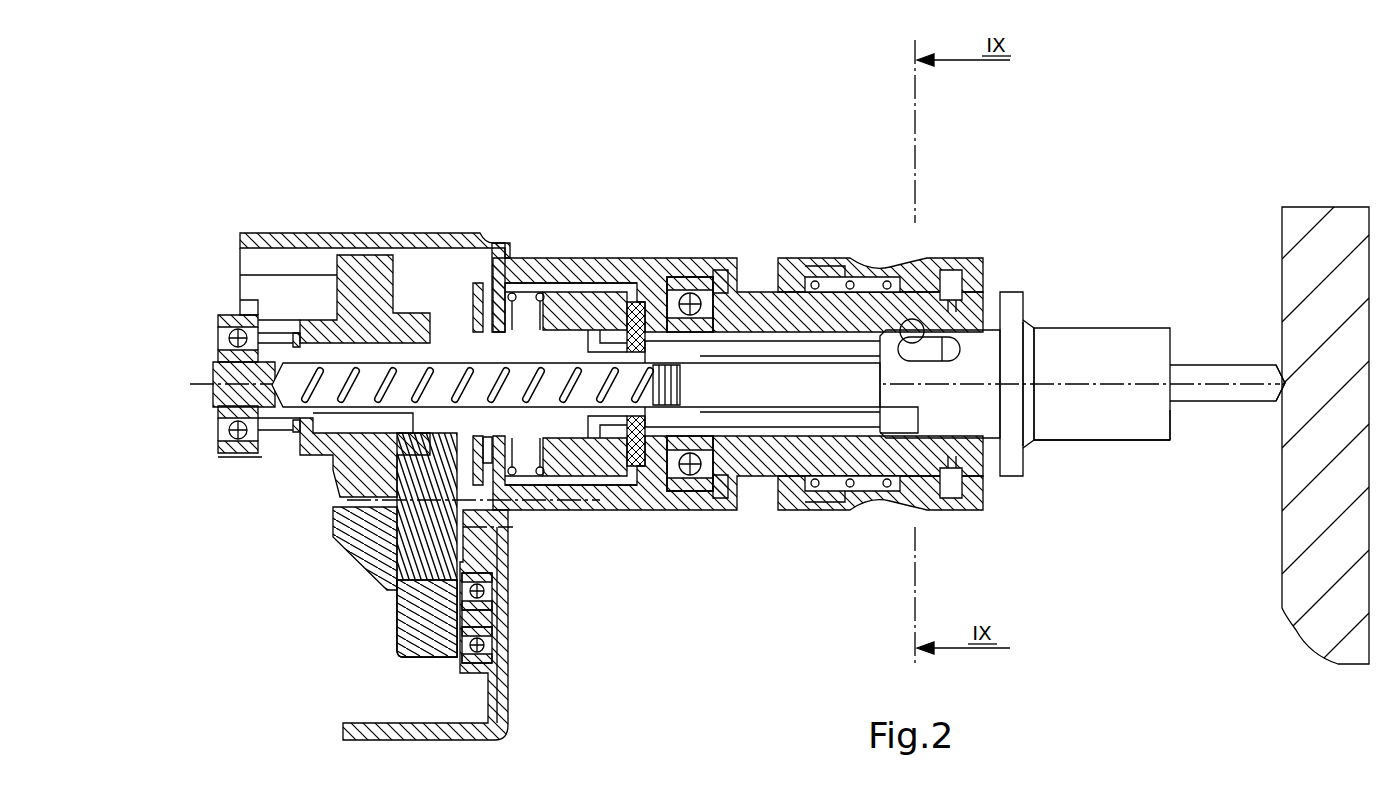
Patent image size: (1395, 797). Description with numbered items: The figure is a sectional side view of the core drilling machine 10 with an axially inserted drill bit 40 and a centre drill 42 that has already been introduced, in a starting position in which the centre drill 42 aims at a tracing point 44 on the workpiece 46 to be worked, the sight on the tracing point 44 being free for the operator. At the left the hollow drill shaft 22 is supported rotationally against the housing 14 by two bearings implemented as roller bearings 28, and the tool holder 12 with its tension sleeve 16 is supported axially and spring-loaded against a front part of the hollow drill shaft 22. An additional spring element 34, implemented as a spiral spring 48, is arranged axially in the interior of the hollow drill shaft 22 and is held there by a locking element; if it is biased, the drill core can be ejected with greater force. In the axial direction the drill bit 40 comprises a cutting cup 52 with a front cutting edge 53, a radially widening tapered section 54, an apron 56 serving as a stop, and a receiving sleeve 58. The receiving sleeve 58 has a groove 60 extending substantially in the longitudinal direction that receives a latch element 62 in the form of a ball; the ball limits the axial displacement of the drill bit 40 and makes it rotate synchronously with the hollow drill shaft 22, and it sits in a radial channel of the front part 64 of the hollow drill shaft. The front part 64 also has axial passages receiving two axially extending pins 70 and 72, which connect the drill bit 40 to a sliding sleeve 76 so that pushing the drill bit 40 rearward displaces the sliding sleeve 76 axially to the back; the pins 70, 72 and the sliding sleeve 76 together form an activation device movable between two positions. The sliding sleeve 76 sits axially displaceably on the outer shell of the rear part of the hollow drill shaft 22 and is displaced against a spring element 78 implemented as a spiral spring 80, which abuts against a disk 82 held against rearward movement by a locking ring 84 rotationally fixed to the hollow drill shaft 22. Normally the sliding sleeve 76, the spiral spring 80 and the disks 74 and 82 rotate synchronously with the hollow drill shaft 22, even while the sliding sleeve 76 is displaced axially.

The core drilling machine 10 is at (572, 153).
The tool holder 12 is at (870, 226).
The housing 14 is at (510, 695).
The tension sleeve 16 is at (950, 258).
The hollow drill shaft 22 is at (213, 378).
The roller bearings 28 is at (700, 277).
The additional spring element 34 is at (546, 392).
The drill bit 40 is at (1071, 436).
The centre drill 42 is at (1214, 365).
The tracing point 44 is at (1289, 374).
The workpiece 46 is at (1282, 572).
The spiral spring 48 is at (278, 408).
The cutting cup 52 is at (1108, 324).
The front cutting edge 53 is at (1175, 421).
The tapered section 54 is at (1030, 318).
The apron 56 is at (1022, 305).
The receiving sleeve 58 is at (1003, 292).
The groove 60 is at (937, 362).
The latch element 62 is at (925, 318).
The front part of the hollow drill shaft 64 is at (850, 454).
The pin 70 is at (752, 272).
The pin 72 is at (760, 500).
The disk 74 is at (638, 445).
The sliding sleeve 76 is at (660, 270).
The spring element 78 is at (497, 455).
The spiral spring 80 is at (552, 285).
The disk 82 is at (455, 316).
The locking ring 84 is at (462, 312).